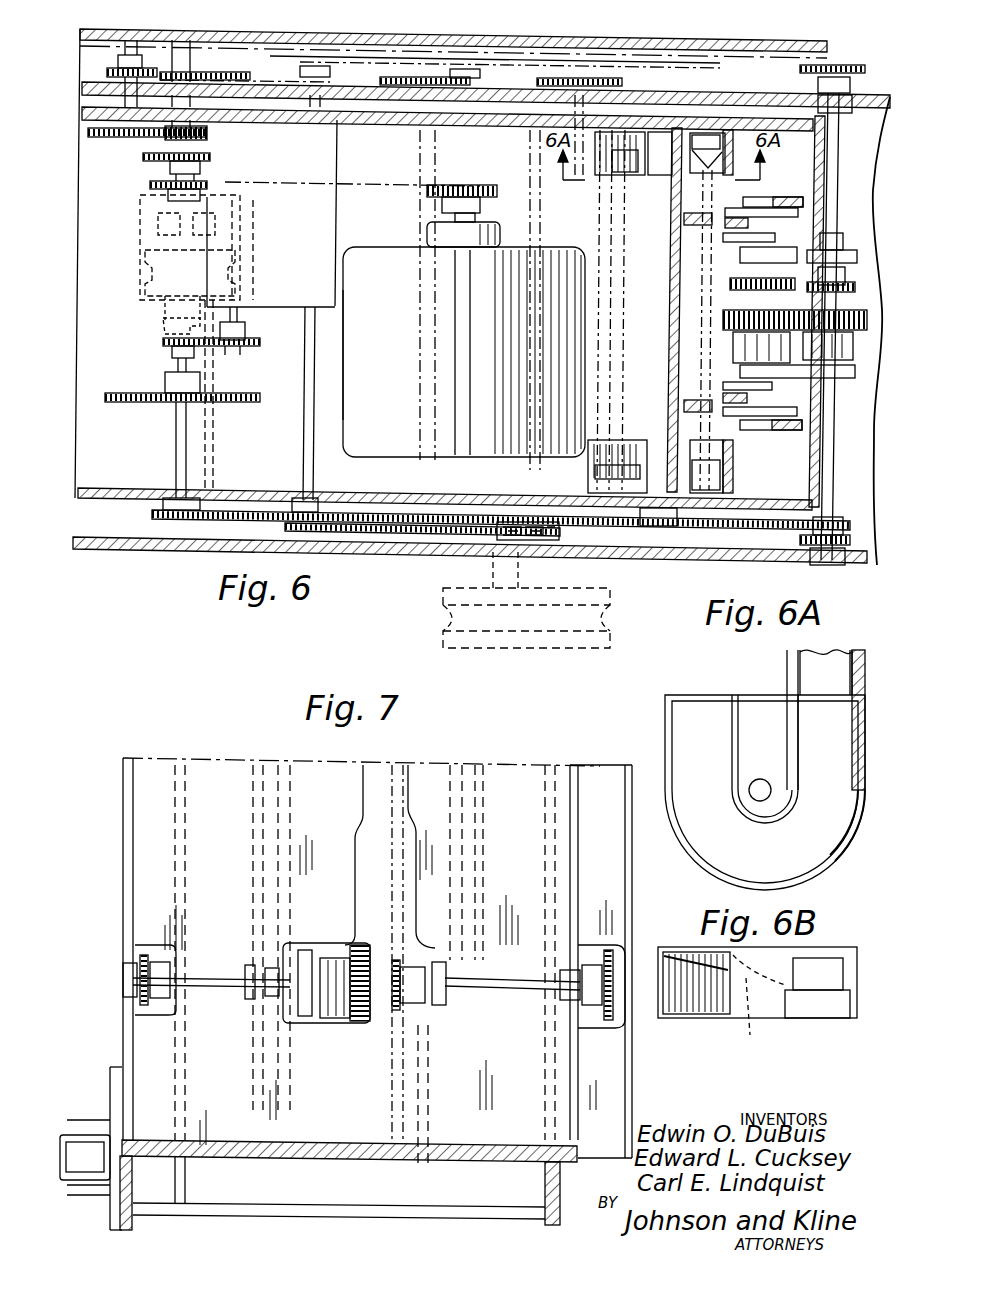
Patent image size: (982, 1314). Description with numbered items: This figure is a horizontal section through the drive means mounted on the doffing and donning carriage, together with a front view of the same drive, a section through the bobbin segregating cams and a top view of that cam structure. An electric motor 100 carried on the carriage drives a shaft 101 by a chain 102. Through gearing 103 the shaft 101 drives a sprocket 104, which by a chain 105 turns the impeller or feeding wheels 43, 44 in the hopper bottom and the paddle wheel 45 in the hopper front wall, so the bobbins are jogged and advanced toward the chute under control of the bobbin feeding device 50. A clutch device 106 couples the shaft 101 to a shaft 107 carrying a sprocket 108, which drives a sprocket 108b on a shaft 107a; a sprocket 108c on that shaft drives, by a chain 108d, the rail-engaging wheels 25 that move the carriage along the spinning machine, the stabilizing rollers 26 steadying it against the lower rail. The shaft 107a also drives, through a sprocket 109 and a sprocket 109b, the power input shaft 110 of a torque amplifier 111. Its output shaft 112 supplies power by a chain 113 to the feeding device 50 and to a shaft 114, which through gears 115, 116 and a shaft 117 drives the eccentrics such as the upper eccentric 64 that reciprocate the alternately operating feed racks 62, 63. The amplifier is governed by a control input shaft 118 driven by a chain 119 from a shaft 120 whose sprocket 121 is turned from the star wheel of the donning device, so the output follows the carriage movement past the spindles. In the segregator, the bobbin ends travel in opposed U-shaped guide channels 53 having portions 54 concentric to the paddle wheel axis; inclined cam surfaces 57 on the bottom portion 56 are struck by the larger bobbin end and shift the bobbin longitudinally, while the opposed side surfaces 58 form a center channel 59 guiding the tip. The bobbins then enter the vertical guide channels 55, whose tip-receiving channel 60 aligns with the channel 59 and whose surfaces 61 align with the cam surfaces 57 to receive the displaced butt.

In FIG. 6, the rail-engaging wheels 25 is at (455, 619).
In FIG. 7, the stabilizing rollers 26 is at (88, 1160).
In FIG. 6, the impeller or feeding wheel 43 is at (255, 245).
In FIG. 6, the impeller or feeding wheel 44 is at (380, 375).
In FIG. 6, the paddle wheel 45 is at (532, 234).
In FIG. 6, the bobbin feeding device 50 is at (614, 295).
In FIG. 6, the U-shaped guide channels 53 is at (590, 185).
In FIG. 6A, the U-shaped guide channels 53 is at (666, 738).
In FIG. 6A, the concentric portions 54 is at (695, 869).
In FIG. 6, the vertical guide channels 55 is at (737, 146).
In FIG. 6A, the vertical guide channels 55 is at (790, 666).
In FIG. 6A, the bottom portion 56 is at (695, 820).
In FIG. 6B, the bottom portion 56 is at (818, 960).
In FIG. 6, the inclined cam surfaces 57 is at (615, 165).
In FIG. 6A, the inclined cam surfaces 57 is at (780, 815).
In FIG. 6B, the inclined cam surfaces 57 is at (757, 1002).
In FIG. 6, the opposed side surfaces 58 is at (725, 500).
In FIG. 6A, the opposed side surfaces 58 is at (842, 770).
In FIG. 6B, the opposed side surfaces 58 is at (850, 975).
In FIG. 6A, the center channel 59 is at (834, 756).
In FIG. 6B, the center channel 59 is at (822, 995).
In FIG. 6, the tip-receiving channel 60 is at (698, 140).
In FIG. 6A, the tip-receiving channel 60 is at (835, 662).
In FIG. 6, the surfaces 61 is at (738, 448).
In FIG. 6A, the surfaces 61 is at (850, 683).
In FIG. 6B, the surfaces 61 is at (798, 995).
In FIG. 6, the feed rack 62 is at (770, 197).
In FIG. 6, the feed rack 63 is at (723, 223).
In FIG. 6, the upper eccentric 64 is at (762, 236).
In FIG. 6, the electric motor 100 is at (392, 290).
In FIG. 6, the shaft 101 is at (178, 175).
In FIG. 6, the chain 102 is at (290, 180).
In FIG. 6, the gearing 103 is at (150, 147).
In FIG. 6, the sprocket 104 is at (150, 66).
In FIG. 6, the chain 105 is at (270, 72).
In FIG. 6, the clutch device 106 is at (140, 284).
In FIG. 6, the shaft 107 is at (168, 305).
In FIG. 6, the shaft 107a is at (172, 450).
In FIG. 6, the sprocket 108 is at (155, 415).
In FIG. 6, the sprocket 108b is at (133, 402).
In FIG. 6, the sprocket 108c is at (160, 515).
In FIG. 6, the chain 108d is at (250, 510).
In FIG. 6, the sprocket 109 is at (170, 340).
In FIG. 6, the sprocket 109b is at (238, 352).
In FIG. 6, the power input shaft 110 is at (245, 324).
In FIG. 6, the torque amplifier 111 is at (302, 288).
In FIG. 6, the output shaft 112 is at (304, 418).
In FIG. 6, the chain 113 is at (352, 537).
In FIG. 6, the shaft 114 is at (850, 458).
In FIG. 7, the shaft 114 is at (242, 998).
In FIG. 6, the gear 115 is at (858, 360).
In FIG. 7, the gear 115 is at (355, 1025).
In FIG. 6, the gear 116 is at (760, 320).
In FIG. 6, the shaft 117 is at (760, 292).
In FIG. 6, the control input shaft 118 is at (320, 121).
In FIG. 6, the chain 119 is at (505, 60).
In FIG. 6, the shaft 120 is at (838, 165).
In FIG. 7, the shaft 120 is at (514, 993).
In FIG. 6, the sprocket 121 is at (852, 278).
In FIG. 7, the sprocket 121 is at (396, 1015).